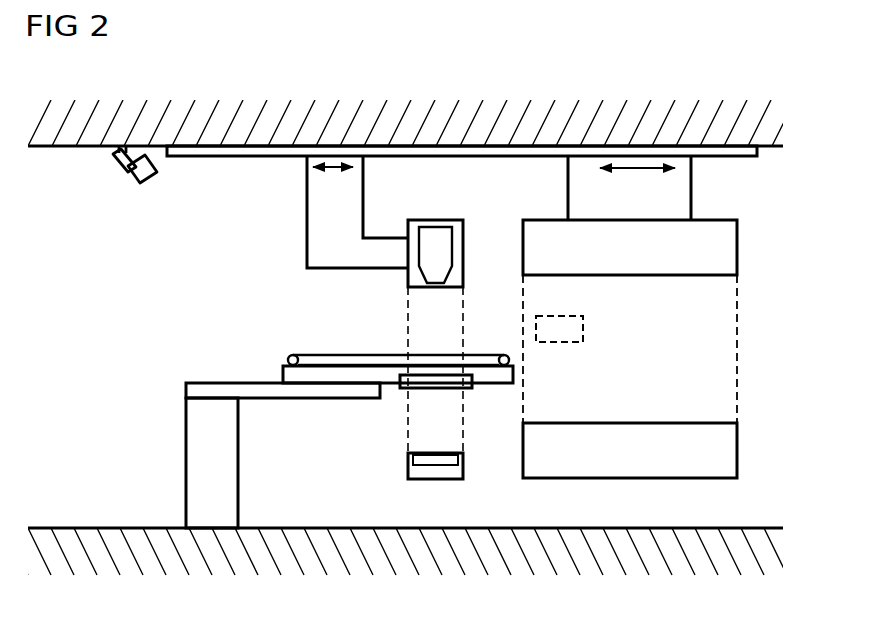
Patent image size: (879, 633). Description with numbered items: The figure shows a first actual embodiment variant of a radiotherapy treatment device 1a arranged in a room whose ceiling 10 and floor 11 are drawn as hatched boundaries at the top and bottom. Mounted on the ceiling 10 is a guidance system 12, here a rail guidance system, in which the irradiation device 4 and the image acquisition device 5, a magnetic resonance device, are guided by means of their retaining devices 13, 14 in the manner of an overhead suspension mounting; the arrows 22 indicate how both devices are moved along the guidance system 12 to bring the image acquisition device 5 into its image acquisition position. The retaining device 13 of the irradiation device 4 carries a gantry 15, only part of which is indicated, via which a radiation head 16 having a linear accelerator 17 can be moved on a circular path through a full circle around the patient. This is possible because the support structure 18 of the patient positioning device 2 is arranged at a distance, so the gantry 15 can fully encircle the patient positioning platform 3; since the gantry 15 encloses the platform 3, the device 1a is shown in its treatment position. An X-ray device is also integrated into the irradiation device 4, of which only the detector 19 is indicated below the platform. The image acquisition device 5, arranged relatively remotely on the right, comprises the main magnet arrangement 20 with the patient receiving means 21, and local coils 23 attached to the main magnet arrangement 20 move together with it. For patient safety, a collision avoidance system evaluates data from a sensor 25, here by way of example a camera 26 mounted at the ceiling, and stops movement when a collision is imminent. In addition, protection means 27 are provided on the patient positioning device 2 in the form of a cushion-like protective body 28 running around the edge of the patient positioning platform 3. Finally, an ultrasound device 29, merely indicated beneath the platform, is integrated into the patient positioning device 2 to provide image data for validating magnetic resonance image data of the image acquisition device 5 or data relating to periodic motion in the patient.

The radiotherapy treatment device 1a is at (193, 300).
The patient positioning device 2 is at (170, 400).
The patient positioning platform 3 is at (284, 376).
The irradiation device 4 is at (272, 228).
The image acquisition device 5 is at (746, 211).
The ceiling 10 is at (265, 108).
The floor 11 is at (65, 538).
The guidance system 12 is at (200, 158).
The retaining device 13 is at (365, 196).
The retaining device 14 is at (582, 180).
The gantry 15 is at (408, 318).
The radiation head 16 is at (412, 277).
The linear accelerator 17 is at (438, 226).
The support structure 18 is at (186, 482).
The detector 19 is at (414, 458).
The main magnet arrangement 20 is at (737, 252).
The patient receiving means 21 is at (724, 348).
The arrows 22 is at (333, 170).
The local coils 23 is at (536, 324).
The sensor 25 is at (110, 187).
The camera 26 is at (112, 170).
The protection means 27 is at (284, 353).
The protective body 28 is at (313, 360).
The ultrasound device 29 is at (453, 384).